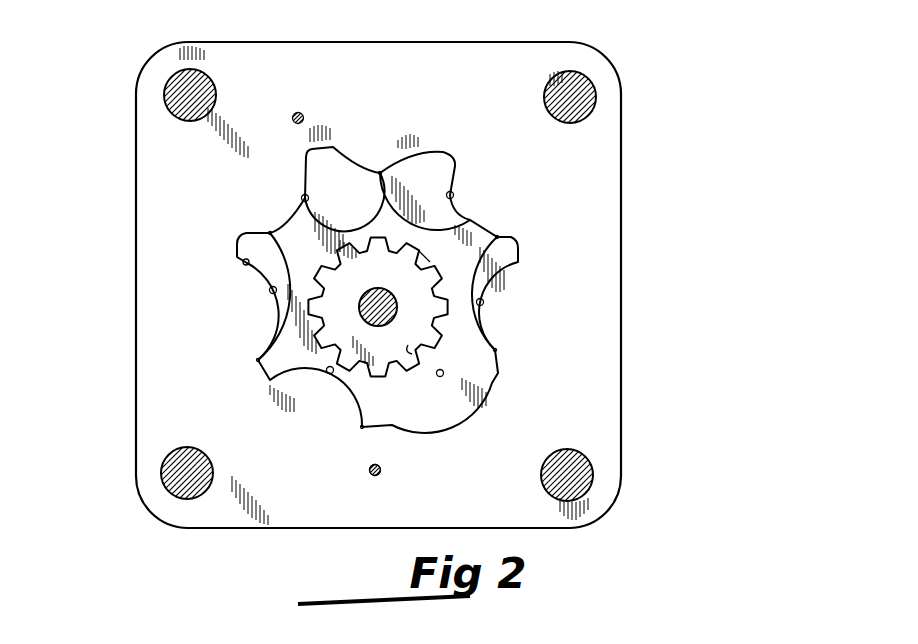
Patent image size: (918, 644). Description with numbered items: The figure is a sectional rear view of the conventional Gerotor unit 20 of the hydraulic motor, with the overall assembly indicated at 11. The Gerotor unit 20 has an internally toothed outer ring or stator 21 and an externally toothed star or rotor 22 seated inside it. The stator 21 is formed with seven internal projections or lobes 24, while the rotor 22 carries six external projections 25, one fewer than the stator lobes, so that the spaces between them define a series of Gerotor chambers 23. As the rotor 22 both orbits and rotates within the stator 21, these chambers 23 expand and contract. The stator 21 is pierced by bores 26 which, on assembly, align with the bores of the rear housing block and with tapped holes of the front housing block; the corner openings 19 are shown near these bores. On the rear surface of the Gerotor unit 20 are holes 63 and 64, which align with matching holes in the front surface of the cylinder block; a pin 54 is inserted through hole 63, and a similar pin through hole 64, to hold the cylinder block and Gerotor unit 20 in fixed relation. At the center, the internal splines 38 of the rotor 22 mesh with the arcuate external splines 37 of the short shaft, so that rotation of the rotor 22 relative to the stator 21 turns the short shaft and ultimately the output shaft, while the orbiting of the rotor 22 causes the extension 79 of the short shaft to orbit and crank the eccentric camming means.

The indexing assembly 11 is at (625, 68).
The mounting holes 19 is at (180, 72).
The Gerotor unit 20 is at (133, 155).
The stator 21 is at (388, 88).
The rotor 22 is at (392, 224).
The Gerotor chambers 23 is at (347, 196).
The internal projections 24 is at (302, 196).
The external projections 25 is at (383, 171).
The bores 26 is at (165, 90).
The arcuate external splines 37 is at (428, 260).
The internal splines 38 is at (414, 350).
The pin 54 is at (372, 476).
The hole 63 is at (382, 470).
The hole 64 is at (292, 118).
The extension 79 is at (390, 296).